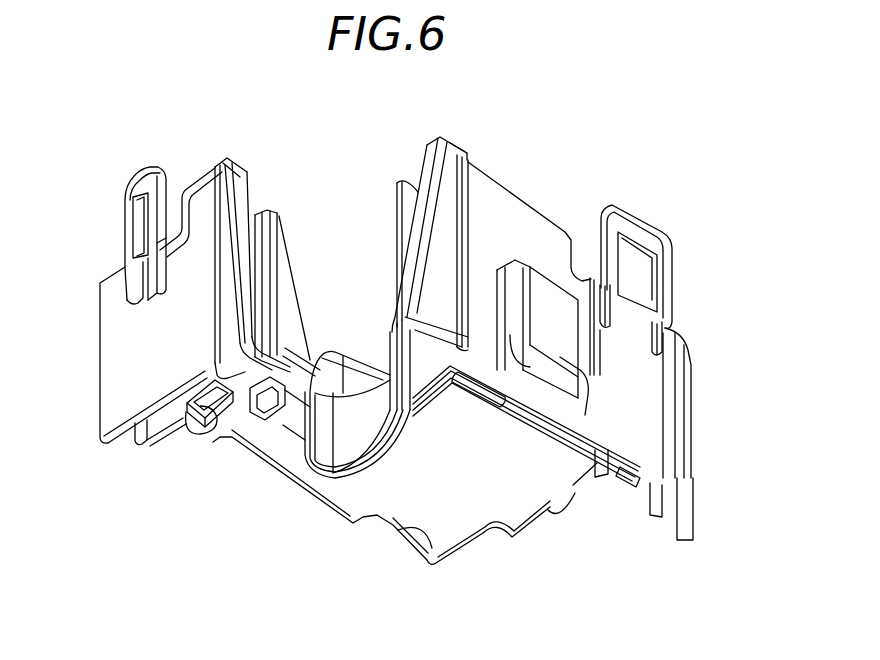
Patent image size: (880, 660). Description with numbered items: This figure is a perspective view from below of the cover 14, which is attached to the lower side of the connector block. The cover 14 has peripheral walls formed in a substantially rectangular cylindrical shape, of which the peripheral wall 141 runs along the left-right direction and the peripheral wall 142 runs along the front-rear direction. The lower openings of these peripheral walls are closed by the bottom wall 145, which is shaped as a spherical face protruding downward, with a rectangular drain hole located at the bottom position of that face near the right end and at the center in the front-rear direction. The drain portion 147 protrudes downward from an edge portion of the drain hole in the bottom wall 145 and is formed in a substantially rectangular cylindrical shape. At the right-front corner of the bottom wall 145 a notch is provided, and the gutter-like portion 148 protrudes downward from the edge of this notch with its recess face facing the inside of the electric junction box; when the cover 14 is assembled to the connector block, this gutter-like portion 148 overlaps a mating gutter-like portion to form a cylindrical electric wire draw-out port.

The cover 14 is at (706, 234).
The peripheral wall 141 is at (560, 337).
The peripheral wall 142 is at (113, 380).
The bottom wall 145 is at (325, 493).
The drain portion 147 is at (252, 402).
The gutter-like portion 148 is at (372, 455).